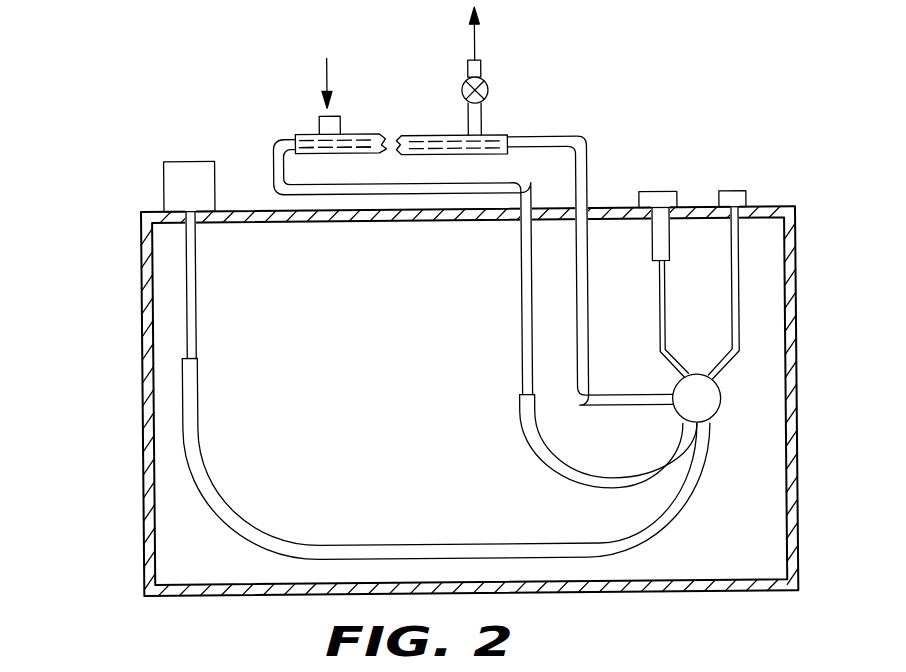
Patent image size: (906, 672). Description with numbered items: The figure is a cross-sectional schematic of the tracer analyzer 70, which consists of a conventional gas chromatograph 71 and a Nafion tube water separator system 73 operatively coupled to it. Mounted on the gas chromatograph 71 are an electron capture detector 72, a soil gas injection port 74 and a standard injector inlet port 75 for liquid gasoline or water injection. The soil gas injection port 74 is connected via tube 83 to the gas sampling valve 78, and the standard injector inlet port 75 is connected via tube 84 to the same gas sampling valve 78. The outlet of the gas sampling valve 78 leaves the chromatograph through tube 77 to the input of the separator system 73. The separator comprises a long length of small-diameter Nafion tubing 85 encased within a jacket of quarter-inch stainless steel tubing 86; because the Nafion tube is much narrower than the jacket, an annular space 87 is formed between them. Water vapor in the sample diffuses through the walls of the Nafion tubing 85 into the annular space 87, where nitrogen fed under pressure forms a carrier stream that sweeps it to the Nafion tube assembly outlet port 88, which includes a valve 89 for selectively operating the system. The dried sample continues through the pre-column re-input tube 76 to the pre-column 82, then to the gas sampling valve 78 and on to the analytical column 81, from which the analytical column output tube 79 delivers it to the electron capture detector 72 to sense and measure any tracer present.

The tracer analyzer 70 is at (101, 179).
The gas chromatograph 71 is at (802, 207).
The electron capture detector 72 is at (186, 161).
The Nafion tube water separator system 73 is at (308, 96).
The soil gas injection port 74 is at (732, 196).
The standard injector inlet port 75 is at (651, 196).
The pre-column re-input tube 76 is at (332, 116).
The outlet port tube 77 is at (589, 243).
The gas sampling valve 78 is at (721, 395).
The analytical column output tube 79 is at (196, 246).
The analytical column 81 is at (461, 547).
The pre-column 82 is at (519, 431).
The tube 83 is at (740, 261).
The tube 84 is at (665, 283).
The Nafion tubing 85 is at (359, 136).
The stainless steel tubing 86 is at (439, 137).
The annular space 87 is at (389, 156).
The Nafion tube assembly outlet port 88 is at (483, 63).
The valve 89 is at (489, 91).